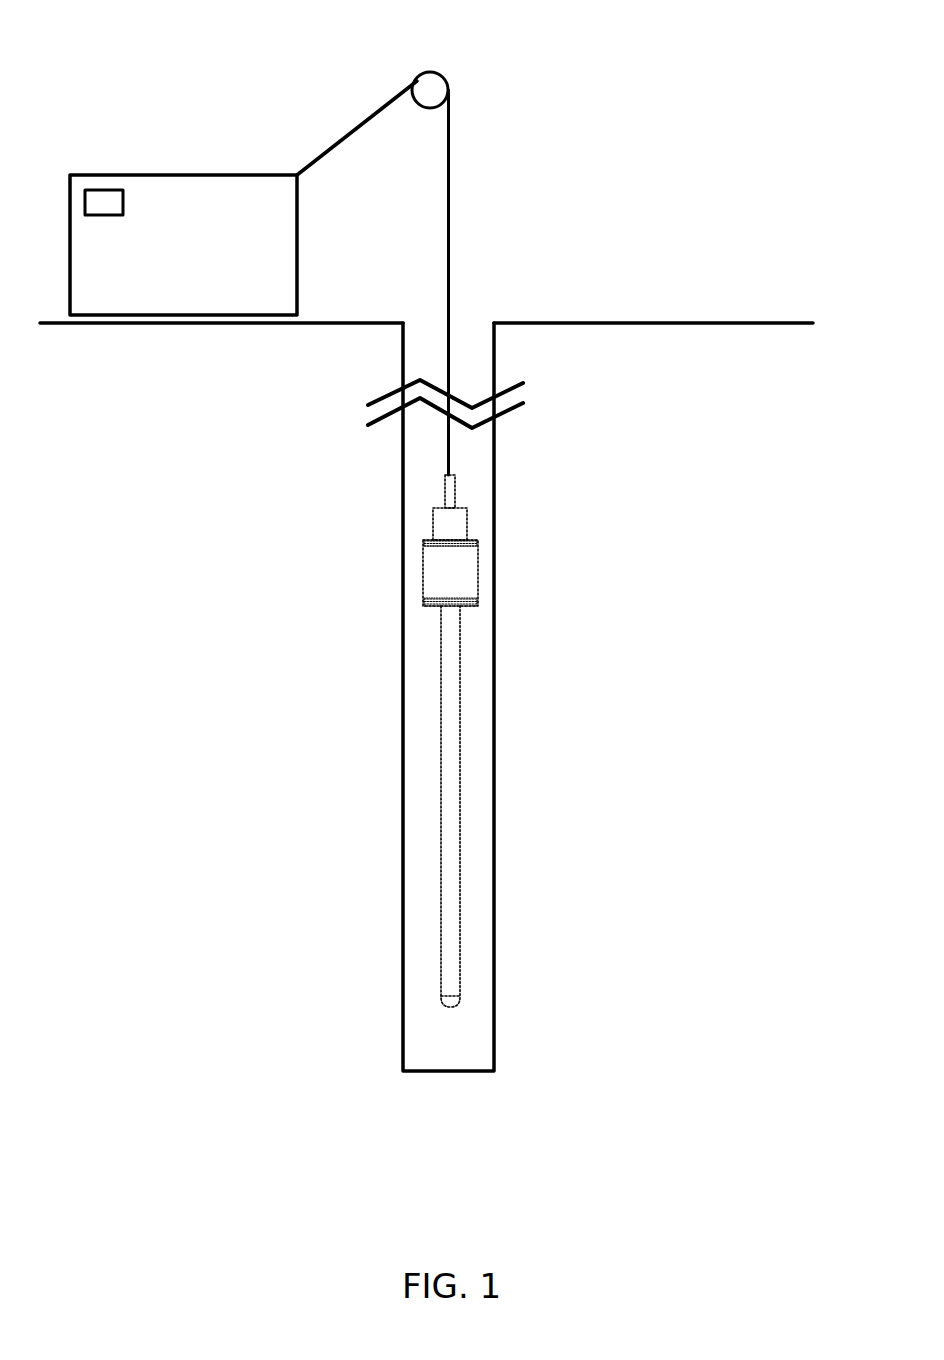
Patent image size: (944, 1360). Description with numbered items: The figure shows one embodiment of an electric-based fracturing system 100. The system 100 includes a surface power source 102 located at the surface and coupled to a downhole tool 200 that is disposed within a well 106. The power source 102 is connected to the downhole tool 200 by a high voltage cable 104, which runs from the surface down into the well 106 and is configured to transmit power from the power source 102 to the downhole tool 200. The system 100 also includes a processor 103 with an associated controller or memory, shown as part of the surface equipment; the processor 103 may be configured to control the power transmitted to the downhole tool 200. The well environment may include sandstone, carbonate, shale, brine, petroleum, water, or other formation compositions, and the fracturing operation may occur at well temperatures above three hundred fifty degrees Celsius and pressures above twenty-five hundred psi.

The electric-based fracturing system 100 is at (795, 122).
The surface power source 102 is at (208, 260).
The processor 103 is at (103, 189).
The high voltage cable 104 is at (448, 215).
The well 106 is at (494, 895).
The downhole tool 200 is at (500, 582).